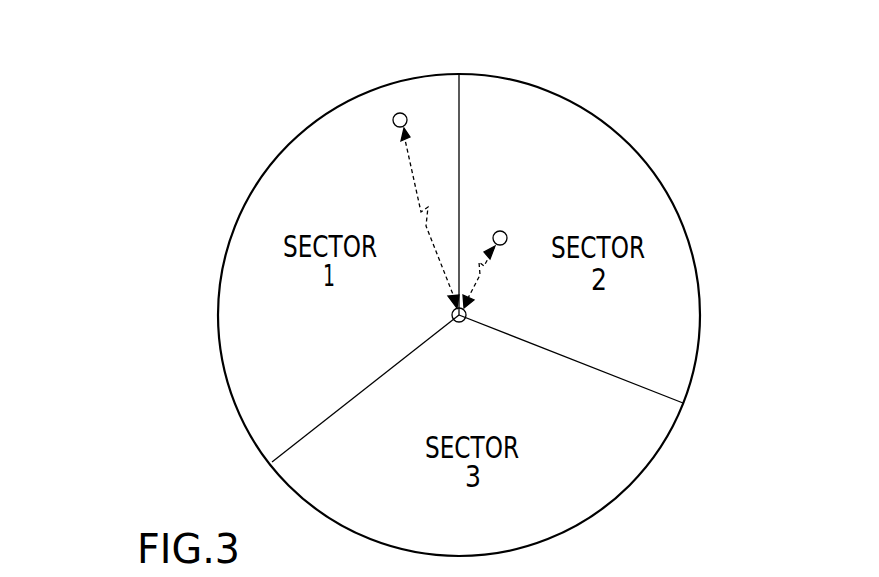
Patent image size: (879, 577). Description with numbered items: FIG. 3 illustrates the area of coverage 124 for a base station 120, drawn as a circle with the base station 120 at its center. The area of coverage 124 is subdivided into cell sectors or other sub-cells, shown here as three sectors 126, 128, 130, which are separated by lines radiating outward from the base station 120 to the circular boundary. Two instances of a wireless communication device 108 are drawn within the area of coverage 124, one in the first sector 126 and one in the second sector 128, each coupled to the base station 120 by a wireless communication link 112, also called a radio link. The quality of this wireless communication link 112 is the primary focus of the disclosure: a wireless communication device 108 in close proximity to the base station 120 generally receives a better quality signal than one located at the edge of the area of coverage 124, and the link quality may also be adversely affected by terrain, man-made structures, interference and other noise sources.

The wireless communication device 108 is at (397, 112).
The wireless communication link 112 is at (417, 200).
The base station 120 is at (462, 322).
The area of coverage 124 is at (159, 409).
The sector 126 is at (300, 131).
The sector 128 is at (660, 177).
The sector 130 is at (655, 458).